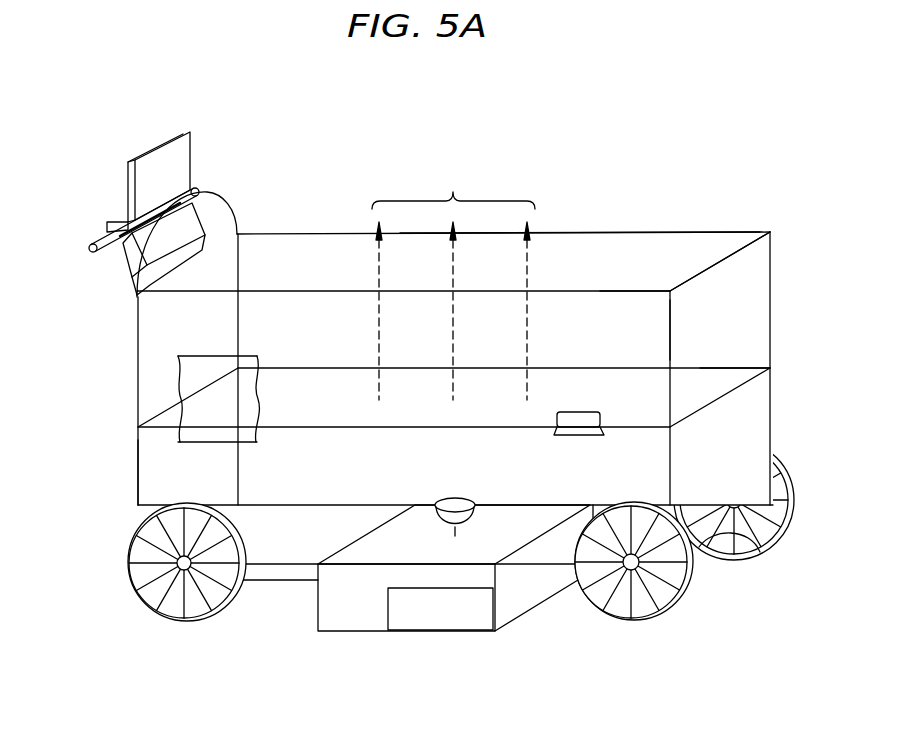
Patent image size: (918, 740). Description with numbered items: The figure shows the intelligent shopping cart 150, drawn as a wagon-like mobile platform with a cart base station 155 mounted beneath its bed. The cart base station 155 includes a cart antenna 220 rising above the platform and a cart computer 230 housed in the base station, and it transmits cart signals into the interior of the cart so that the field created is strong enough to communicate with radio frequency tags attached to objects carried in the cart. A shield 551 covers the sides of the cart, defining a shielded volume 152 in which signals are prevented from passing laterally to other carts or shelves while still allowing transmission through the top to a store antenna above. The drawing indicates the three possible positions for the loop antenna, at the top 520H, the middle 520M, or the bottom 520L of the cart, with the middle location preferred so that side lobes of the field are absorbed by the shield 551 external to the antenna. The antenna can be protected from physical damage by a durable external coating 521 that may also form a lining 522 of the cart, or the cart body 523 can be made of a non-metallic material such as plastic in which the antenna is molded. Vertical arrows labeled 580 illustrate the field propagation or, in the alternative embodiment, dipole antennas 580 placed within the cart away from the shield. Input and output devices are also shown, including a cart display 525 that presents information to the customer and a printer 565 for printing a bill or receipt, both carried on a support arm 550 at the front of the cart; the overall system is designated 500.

The mobile robotic cart system 500 is at (766, 158).
The cart display 525 is at (180, 160).
The support arm 550 is at (128, 218).
The printer 565 is at (128, 255).
The dipole antennas 580 is at (453, 278).
The shield 551 is at (610, 250).
The top loop antenna position 520H is at (753, 242).
The shielded volume 152 is at (697, 297).
The shopping cart 150 is at (727, 365).
The middle loop antenna position 520M is at (725, 395).
The durable external coating 521 is at (583, 417).
The lining 522 is at (190, 392).
The cart body 523 is at (137, 507).
The cart antenna 220 is at (445, 503).
The bottom loop antenna position 520L is at (762, 549).
The cart base station 155 is at (347, 618).
The cart computer 230 is at (460, 630).